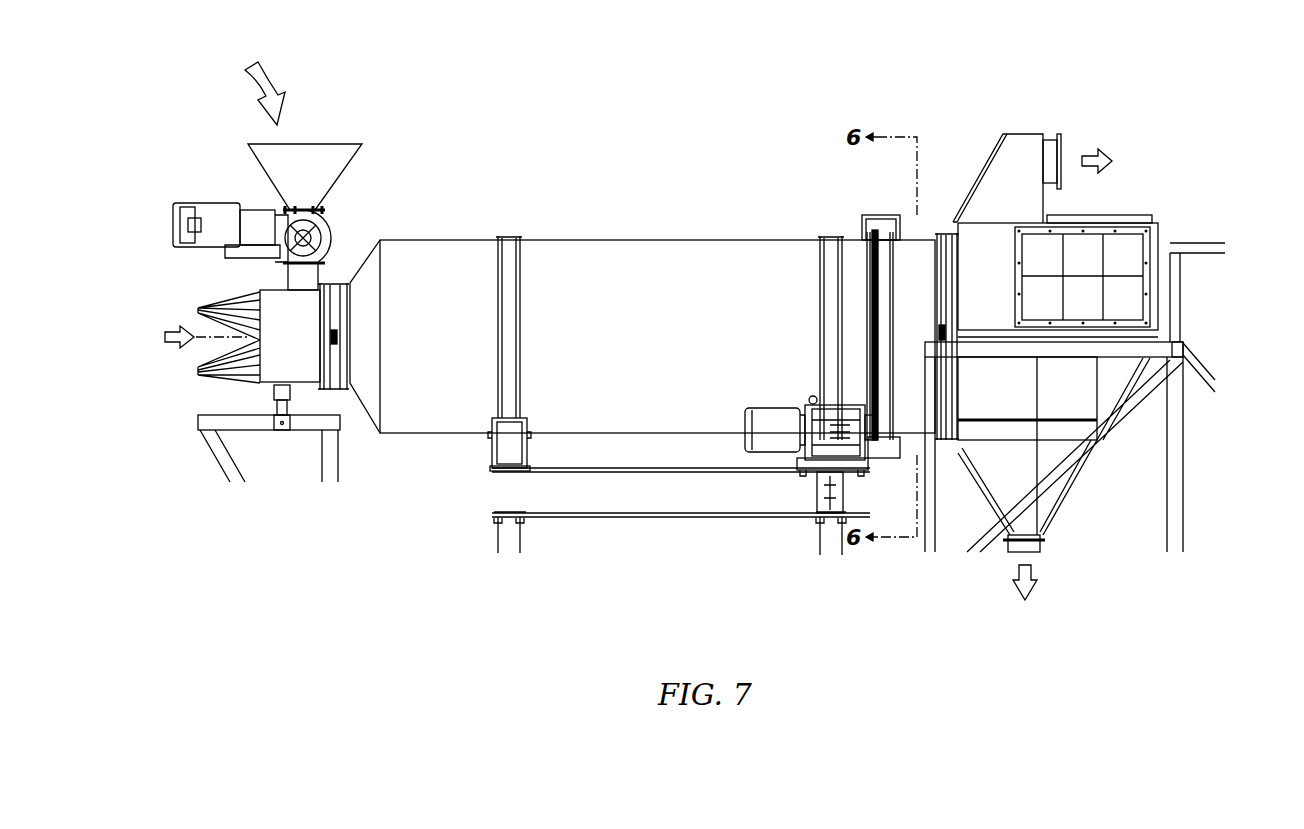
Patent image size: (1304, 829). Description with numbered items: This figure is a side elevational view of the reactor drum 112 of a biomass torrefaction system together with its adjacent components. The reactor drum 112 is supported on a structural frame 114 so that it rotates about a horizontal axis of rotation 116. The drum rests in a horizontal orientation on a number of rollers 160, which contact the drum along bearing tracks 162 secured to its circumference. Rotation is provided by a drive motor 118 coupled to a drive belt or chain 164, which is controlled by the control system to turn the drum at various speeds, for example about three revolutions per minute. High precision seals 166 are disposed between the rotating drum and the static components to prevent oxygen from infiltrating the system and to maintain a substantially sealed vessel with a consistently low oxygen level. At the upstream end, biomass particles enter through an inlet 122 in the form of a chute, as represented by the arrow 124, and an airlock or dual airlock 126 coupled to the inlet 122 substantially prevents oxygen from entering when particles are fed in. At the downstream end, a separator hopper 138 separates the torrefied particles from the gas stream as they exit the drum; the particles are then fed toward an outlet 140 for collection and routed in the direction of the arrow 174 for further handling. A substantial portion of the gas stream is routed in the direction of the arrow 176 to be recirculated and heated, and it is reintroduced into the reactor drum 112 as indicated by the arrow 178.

The reactor drum 112 is at (400, 418).
The structural frame 114 is at (598, 500).
The horizontal axis of rotation 116 is at (1208, 340).
The drive motor 118 is at (842, 415).
The inlet 122 is at (318, 165).
The arrow representing biomass particle input 124 is at (278, 80).
The airlock or dual airlock 126 is at (272, 225).
The separator hopper 138 is at (1024, 152).
The outlet 140 is at (1008, 560).
The rollers 160 is at (492, 442).
The bearing tracks 162 is at (508, 250).
The drive belt or chain 164 is at (880, 250).
The high precision seals 166 is at (338, 288).
The arrow indicating torrefied particle discharge direction 174 is at (1035, 582).
The arrow indicating gas stream routing direction 176 is at (1094, 148).
The arrow indicating reintroduced gas stream 178 is at (178, 325).